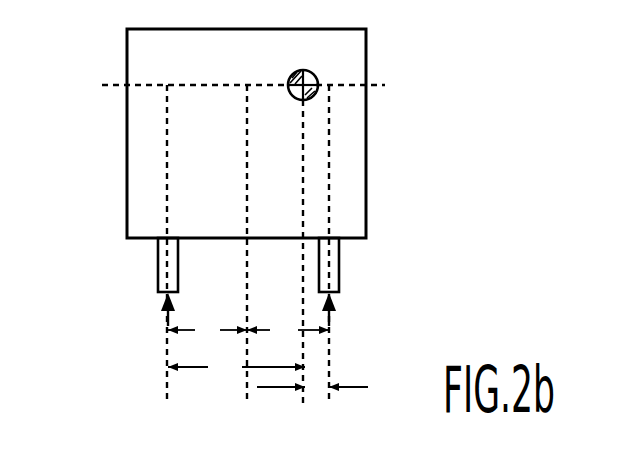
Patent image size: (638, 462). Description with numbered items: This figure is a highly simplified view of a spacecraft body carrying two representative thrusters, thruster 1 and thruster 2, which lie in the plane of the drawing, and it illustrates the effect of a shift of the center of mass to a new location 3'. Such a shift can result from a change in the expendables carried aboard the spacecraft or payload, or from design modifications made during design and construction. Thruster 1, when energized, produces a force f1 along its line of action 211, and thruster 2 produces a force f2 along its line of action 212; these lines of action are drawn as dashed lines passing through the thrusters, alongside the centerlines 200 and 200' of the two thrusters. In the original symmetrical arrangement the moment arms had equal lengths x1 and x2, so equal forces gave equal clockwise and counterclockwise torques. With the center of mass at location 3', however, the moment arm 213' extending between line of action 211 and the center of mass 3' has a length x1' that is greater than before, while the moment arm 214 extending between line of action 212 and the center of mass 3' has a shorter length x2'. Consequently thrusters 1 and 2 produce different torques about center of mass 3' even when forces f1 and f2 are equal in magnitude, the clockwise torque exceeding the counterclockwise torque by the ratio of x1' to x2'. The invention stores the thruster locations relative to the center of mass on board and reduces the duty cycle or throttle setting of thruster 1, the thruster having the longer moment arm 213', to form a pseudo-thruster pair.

The moment arm 213' is at (174, 70).
The moment arm 214 is at (337, 84).
The center of mass 3' is at (310, 66).
The line of action 211 is at (167, 167).
The center line of first leg 200 is at (218, 244).
The center line of second leg 200' is at (364, 251).
The line of action 212 is at (330, 178).
The thruster 1 is at (158, 265).
The thruster 2 is at (339, 263).
The force f1 is at (168, 326).
The force f2 is at (329, 326).
The moment arm length x1 is at (207, 330).
The moment arm length x2 is at (288, 330).
The moment arm length x1' is at (236, 367).
The moment arm length x2' is at (312, 415).